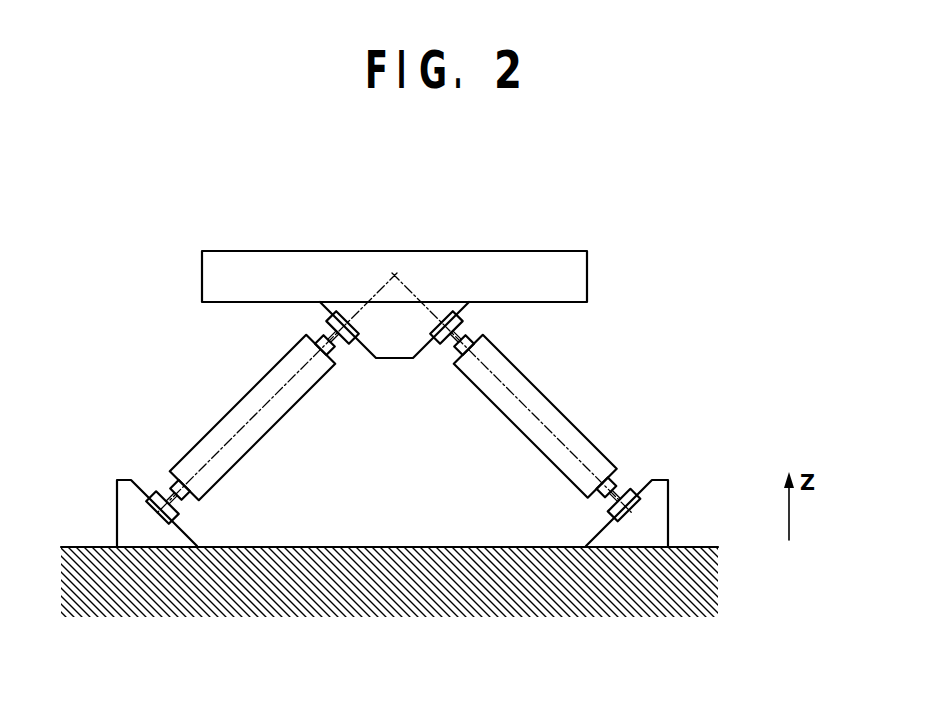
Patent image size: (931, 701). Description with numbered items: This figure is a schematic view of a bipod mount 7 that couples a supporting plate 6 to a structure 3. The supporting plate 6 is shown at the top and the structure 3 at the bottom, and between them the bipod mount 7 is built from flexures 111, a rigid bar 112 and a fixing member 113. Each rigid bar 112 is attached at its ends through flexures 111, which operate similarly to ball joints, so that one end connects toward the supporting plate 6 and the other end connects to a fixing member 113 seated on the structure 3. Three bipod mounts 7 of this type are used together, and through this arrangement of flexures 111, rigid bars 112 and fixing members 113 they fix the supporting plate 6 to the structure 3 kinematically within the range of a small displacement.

The structure 3 is at (511, 588).
The supporting plate 6 is at (402, 310).
The bipod mount 7 is at (625, 394).
The flexure 111 is at (470, 338).
The rigid bar 112 is at (533, 392).
The fixing member 113 is at (692, 465).